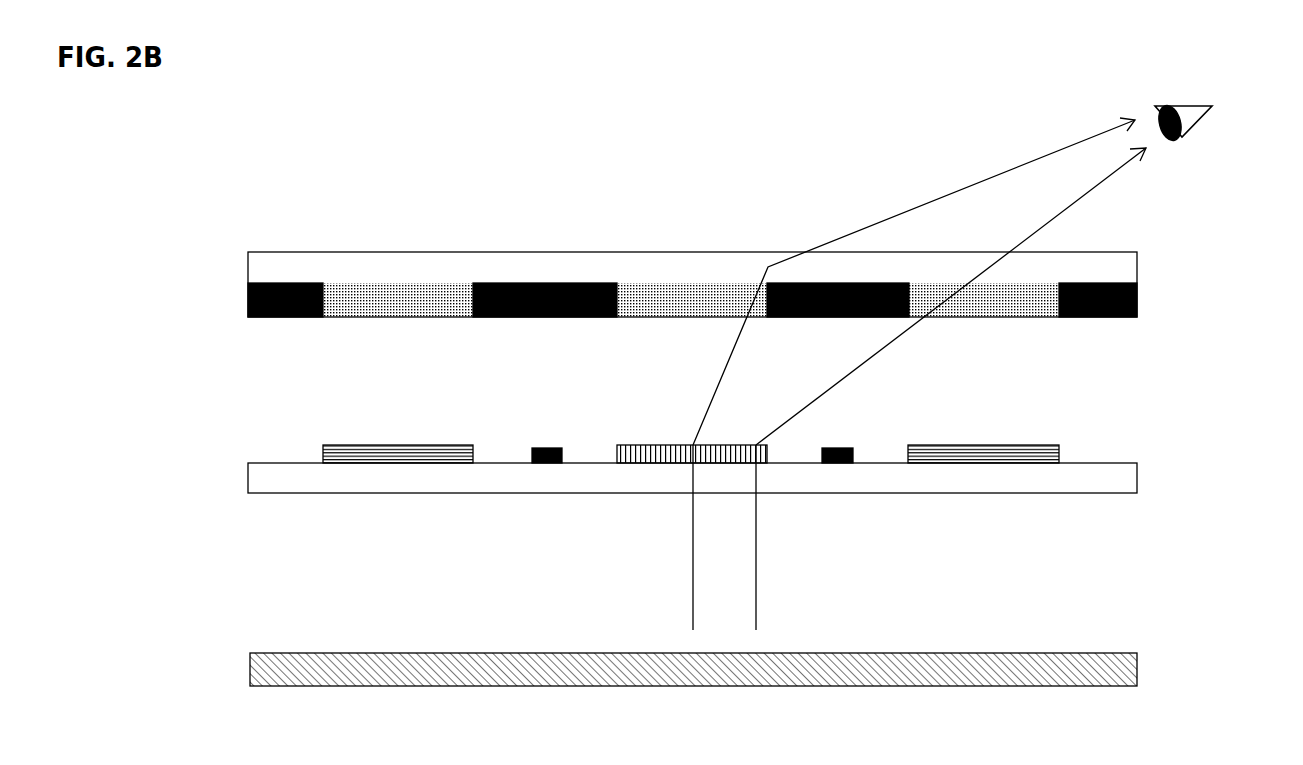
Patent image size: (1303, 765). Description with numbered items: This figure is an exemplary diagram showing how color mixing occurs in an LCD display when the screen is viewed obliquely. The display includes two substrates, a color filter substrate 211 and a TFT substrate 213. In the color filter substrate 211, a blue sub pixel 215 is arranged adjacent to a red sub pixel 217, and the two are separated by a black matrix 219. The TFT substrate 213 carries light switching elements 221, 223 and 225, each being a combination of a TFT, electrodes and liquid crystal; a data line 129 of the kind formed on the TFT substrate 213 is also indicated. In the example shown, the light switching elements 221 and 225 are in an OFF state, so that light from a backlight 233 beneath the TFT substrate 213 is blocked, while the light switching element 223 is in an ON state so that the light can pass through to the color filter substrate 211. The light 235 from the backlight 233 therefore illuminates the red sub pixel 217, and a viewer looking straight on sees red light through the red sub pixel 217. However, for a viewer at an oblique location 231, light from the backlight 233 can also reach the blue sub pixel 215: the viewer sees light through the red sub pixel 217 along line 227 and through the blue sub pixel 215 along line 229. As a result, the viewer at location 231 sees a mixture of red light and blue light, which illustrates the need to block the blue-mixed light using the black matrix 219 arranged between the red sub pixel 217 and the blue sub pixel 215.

The color filter substrate 211 is at (246, 280).
The TFT substrate 213 is at (248, 482).
The blue sub pixel 215 is at (1044, 280).
The red sub pixel 217 is at (640, 288).
The black matrix 219 is at (884, 280).
The light switching element 221 is at (371, 465).
The light switching element 223 is at (655, 465).
The light switching element 225 is at (988, 465).
The data line 129 is at (838, 447).
The line 227 is at (962, 186).
The line 229 is at (1060, 213).
The location 231 is at (1202, 137).
The backlight 233 is at (248, 675).
The light 235 is at (760, 597).